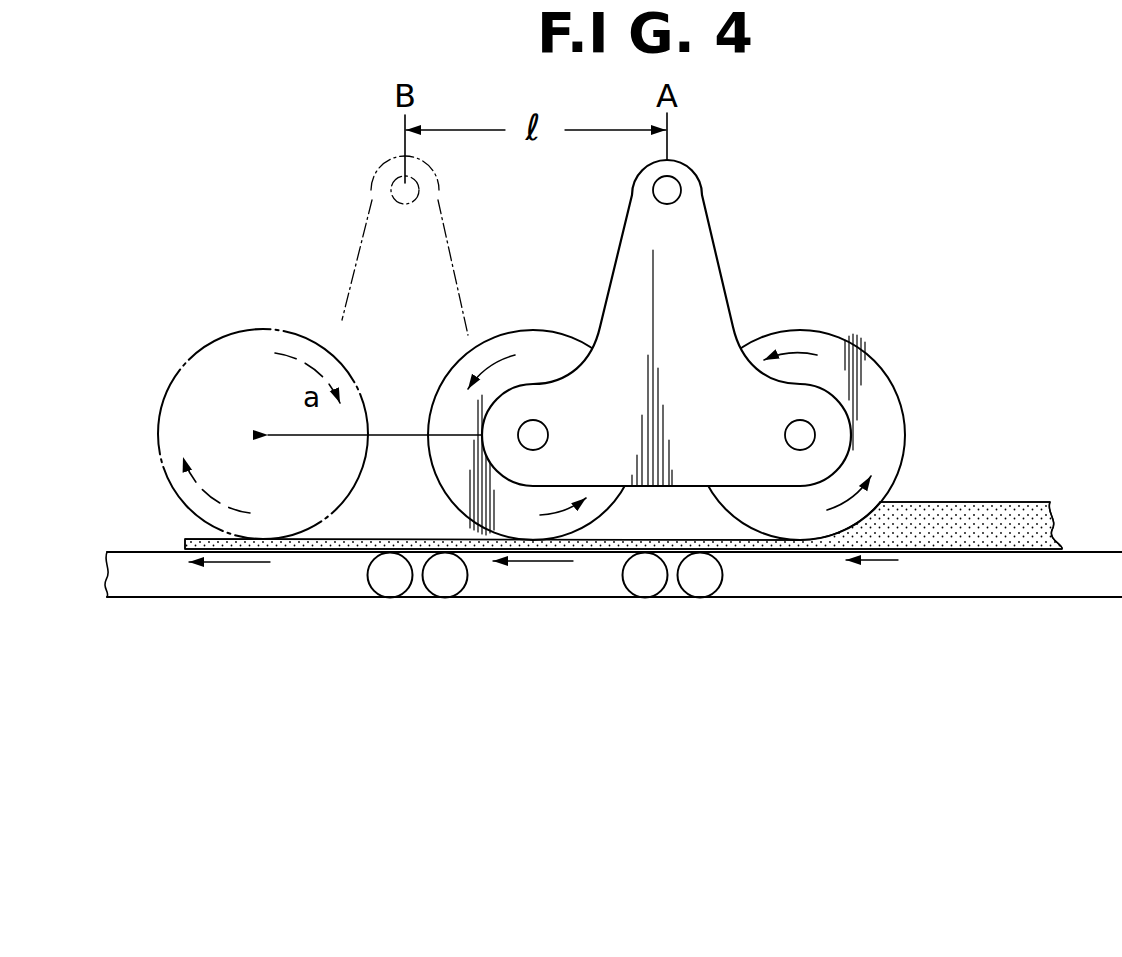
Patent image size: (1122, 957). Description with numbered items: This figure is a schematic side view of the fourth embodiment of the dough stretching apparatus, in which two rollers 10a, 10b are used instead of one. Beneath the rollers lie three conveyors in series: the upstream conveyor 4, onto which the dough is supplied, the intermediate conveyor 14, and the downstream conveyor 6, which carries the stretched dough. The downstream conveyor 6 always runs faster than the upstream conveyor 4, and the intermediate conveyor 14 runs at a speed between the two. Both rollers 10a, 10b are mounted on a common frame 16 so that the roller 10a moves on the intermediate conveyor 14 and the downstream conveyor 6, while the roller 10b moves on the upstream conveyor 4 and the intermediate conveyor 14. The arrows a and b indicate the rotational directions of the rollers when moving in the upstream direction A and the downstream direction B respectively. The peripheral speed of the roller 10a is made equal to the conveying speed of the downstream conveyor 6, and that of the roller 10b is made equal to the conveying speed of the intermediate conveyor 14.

The upstream conveyor 4 is at (793, 597).
The downstream conveyor 6 is at (313, 597).
The roller 10a is at (510, 337).
The roller 10b is at (848, 336).
The intermediate conveyor 14 is at (557, 597).
The frame 16 is at (692, 245).